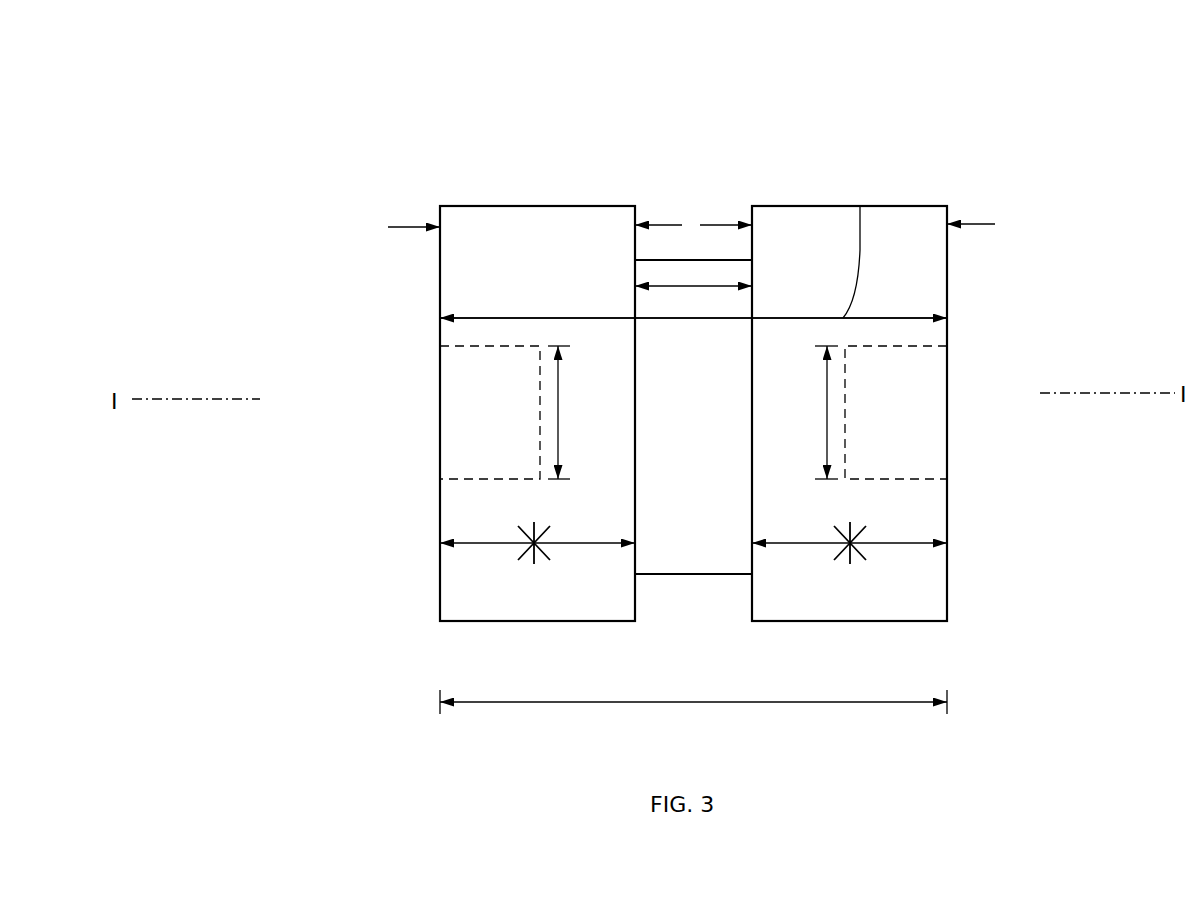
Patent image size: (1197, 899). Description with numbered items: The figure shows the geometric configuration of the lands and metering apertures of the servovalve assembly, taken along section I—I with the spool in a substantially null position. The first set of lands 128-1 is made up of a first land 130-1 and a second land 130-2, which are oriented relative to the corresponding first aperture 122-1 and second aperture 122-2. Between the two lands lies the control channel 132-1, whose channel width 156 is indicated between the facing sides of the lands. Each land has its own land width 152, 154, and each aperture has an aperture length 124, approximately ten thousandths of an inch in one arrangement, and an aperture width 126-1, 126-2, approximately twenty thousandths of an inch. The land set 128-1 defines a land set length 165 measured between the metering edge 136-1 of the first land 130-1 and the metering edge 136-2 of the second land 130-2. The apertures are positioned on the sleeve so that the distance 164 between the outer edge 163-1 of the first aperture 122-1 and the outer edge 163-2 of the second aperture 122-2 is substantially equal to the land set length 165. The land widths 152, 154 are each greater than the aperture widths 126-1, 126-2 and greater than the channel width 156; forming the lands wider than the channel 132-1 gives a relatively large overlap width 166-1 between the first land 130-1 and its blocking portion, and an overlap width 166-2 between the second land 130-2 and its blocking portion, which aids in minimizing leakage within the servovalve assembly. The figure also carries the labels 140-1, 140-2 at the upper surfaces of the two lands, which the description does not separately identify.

The first set of lands 128-1 is at (1018, 128).
The first land 130-1 is at (502, 206).
The second land 130-2 is at (903, 206).
The control channel 132-1 is at (690, 222).
The first detector top surface 140-1 is at (610, 204).
The second detector top surface 140-2 is at (790, 203).
The distance between outer aperture edges 164 is at (860, 206).
The land width 152 is at (406, 227).
The land width 154 is at (975, 224).
The channel width 156 is at (680, 288).
The metering edge 136-1 is at (440, 257).
The metering edge 136-2 is at (947, 307).
The outer edge of the first aperture 163-1 is at (440, 360).
The outer edge of the second aperture 163-2 is at (947, 410).
The aperture length 124 is at (558, 400).
The first aperture 122-1 is at (440, 452).
The second aperture 122-2 is at (947, 457).
The aperture width 126-1 is at (485, 543).
The aperture width 126-2 is at (900, 543).
The overlap width 166-1 is at (580, 543).
The overlap width 166-2 is at (825, 543).
The land set length 165 is at (710, 703).